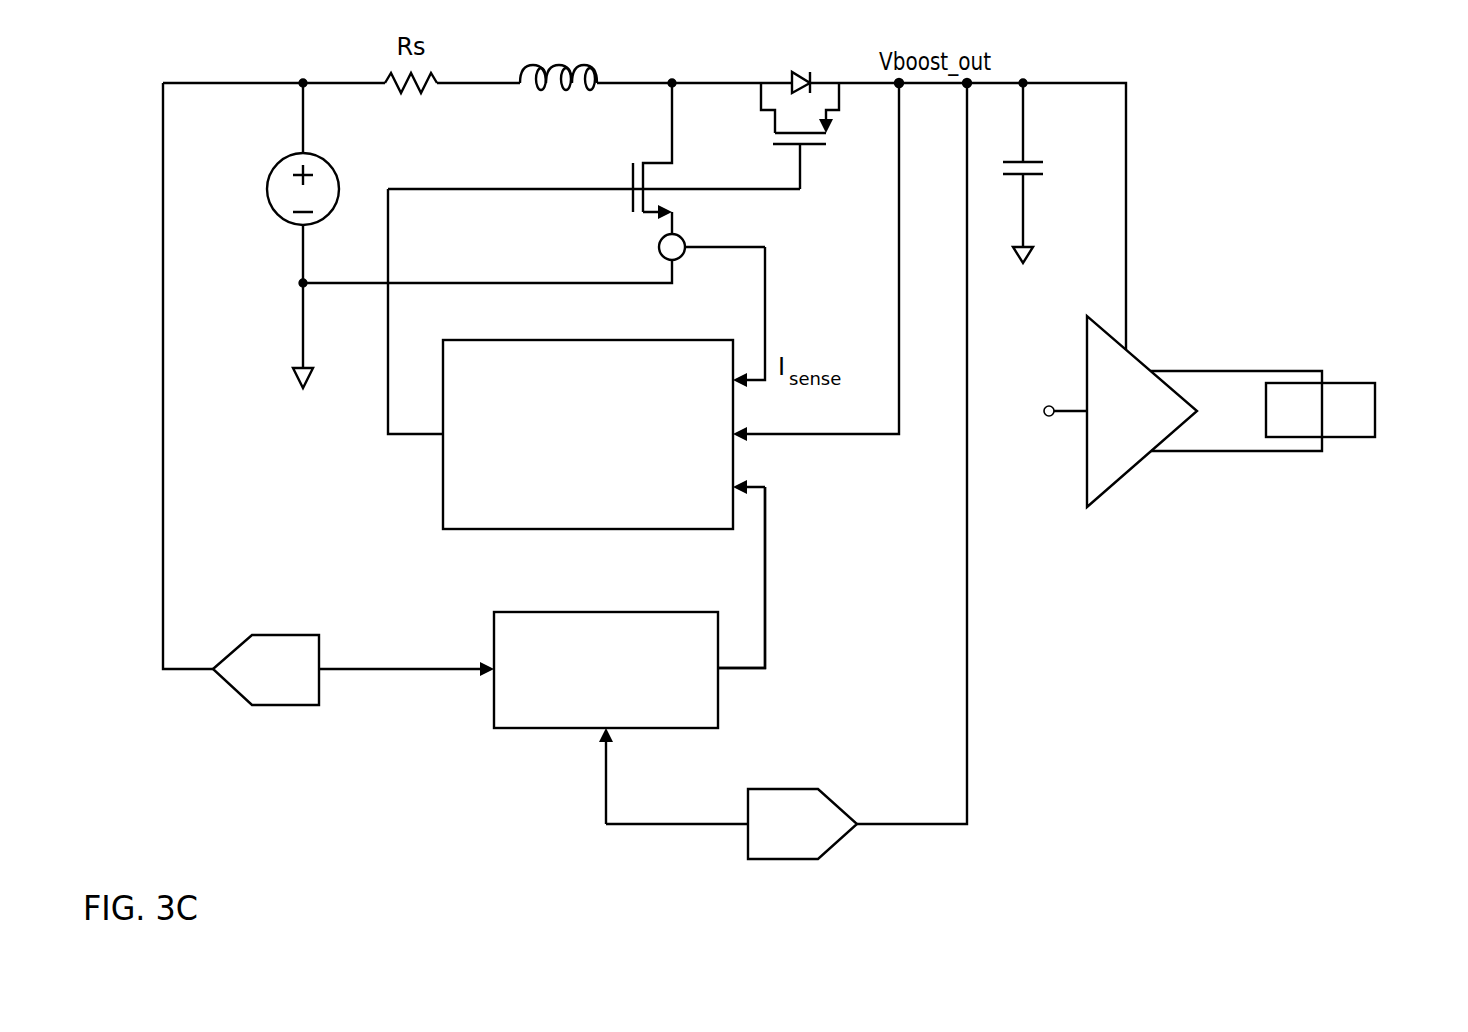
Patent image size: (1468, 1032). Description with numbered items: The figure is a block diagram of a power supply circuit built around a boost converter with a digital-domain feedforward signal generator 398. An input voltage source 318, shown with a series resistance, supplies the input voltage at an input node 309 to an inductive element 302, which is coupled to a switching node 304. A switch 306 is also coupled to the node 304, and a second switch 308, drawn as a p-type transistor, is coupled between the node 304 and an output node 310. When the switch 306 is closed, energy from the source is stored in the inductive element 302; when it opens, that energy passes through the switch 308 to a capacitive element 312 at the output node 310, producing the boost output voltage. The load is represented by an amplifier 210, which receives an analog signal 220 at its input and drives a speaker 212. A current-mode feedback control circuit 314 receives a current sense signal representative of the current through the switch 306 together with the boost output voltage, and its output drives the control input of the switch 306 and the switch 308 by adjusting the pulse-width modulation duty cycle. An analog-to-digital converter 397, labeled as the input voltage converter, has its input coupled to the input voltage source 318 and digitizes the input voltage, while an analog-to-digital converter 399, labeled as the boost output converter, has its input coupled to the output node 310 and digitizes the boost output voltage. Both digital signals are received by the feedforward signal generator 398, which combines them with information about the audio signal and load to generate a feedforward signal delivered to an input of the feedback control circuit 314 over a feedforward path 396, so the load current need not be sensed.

The amplifier 210 is at (1204, 414).
The speaker 212 is at (1375, 410).
The analog signal 220 is at (1065, 412).
The inductive element 302 is at (558, 95).
The node 304 is at (672, 83).
The switch 306 is at (655, 213).
The switch 308 is at (806, 146).
The input node 309 is at (303, 83).
The output node 310 is at (1023, 83).
The capacitive element 312 is at (1030, 160).
The feedback control circuit 314 is at (668, 340).
The input voltage source 318 is at (328, 165).
The feedforward path 396 is at (765, 582).
The analog-to-digital converter 397 is at (283, 635).
The feedforward signal generator 398 is at (550, 728).
The analog-to-digital converter 399 is at (783, 789).